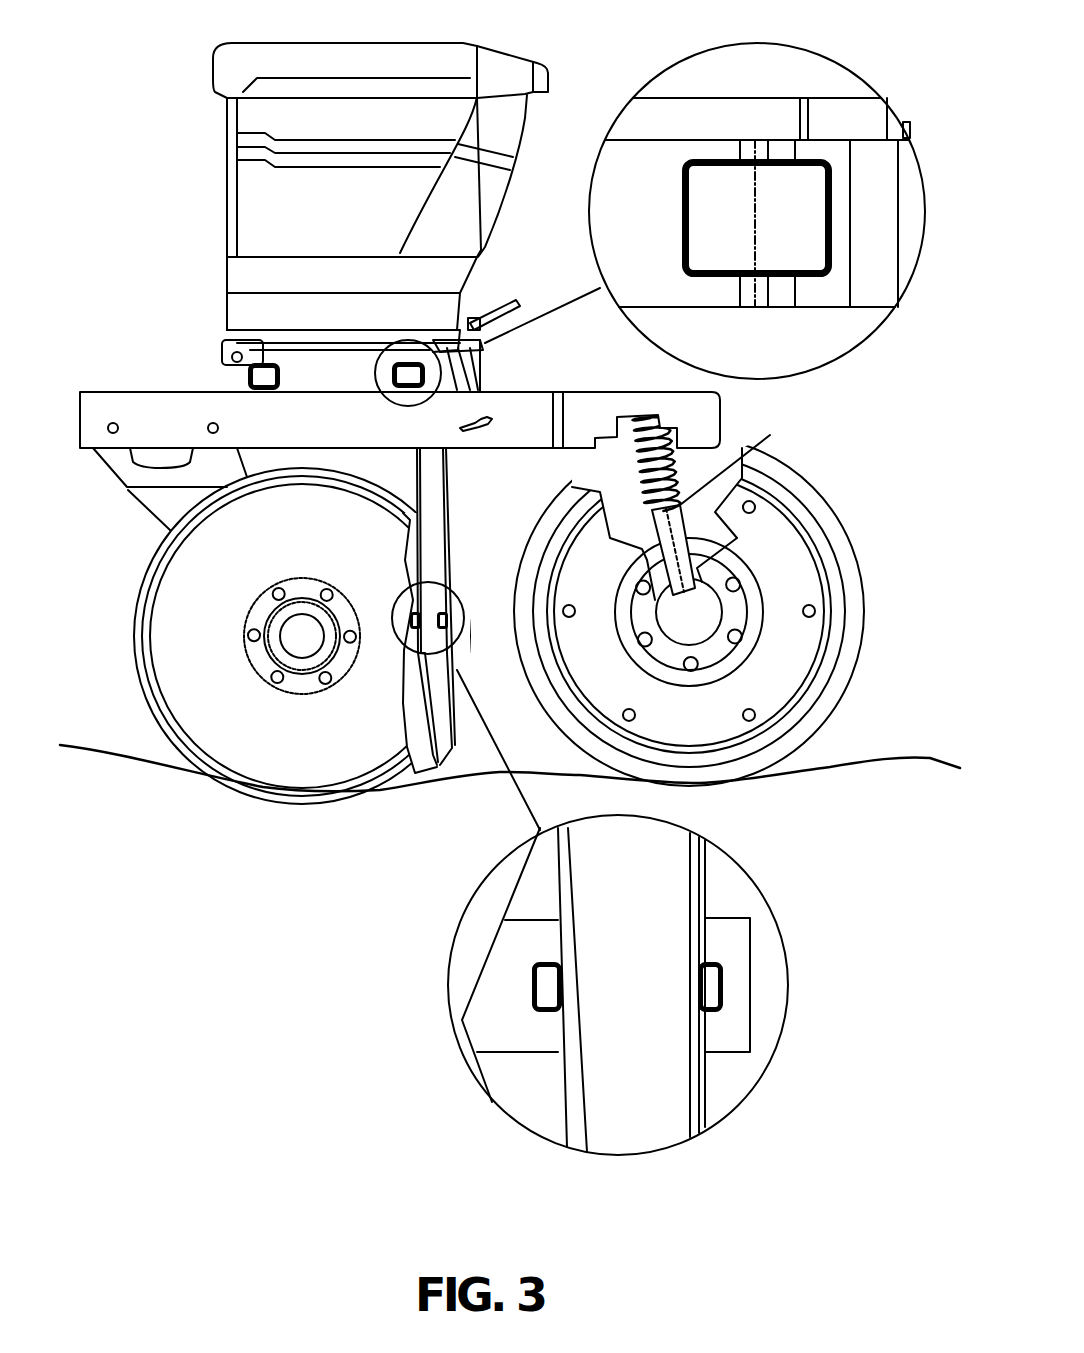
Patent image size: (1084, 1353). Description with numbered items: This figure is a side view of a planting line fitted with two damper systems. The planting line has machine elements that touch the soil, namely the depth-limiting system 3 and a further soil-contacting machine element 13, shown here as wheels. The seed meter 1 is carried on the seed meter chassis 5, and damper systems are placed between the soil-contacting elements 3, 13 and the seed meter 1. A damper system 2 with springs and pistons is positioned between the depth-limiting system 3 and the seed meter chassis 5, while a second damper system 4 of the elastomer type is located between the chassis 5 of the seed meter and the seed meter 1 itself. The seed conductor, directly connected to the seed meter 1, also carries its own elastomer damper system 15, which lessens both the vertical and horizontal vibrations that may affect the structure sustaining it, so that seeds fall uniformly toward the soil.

The seed meter 1 is at (460, 307).
The damper system 2 is at (740, 452).
The depth-limiting system 3 is at (843, 600).
The damper system 4 is at (243, 357).
The seed meter chassis 5 is at (117, 408).
The machine element 13 is at (155, 658).
The damper system 15 is at (457, 607).